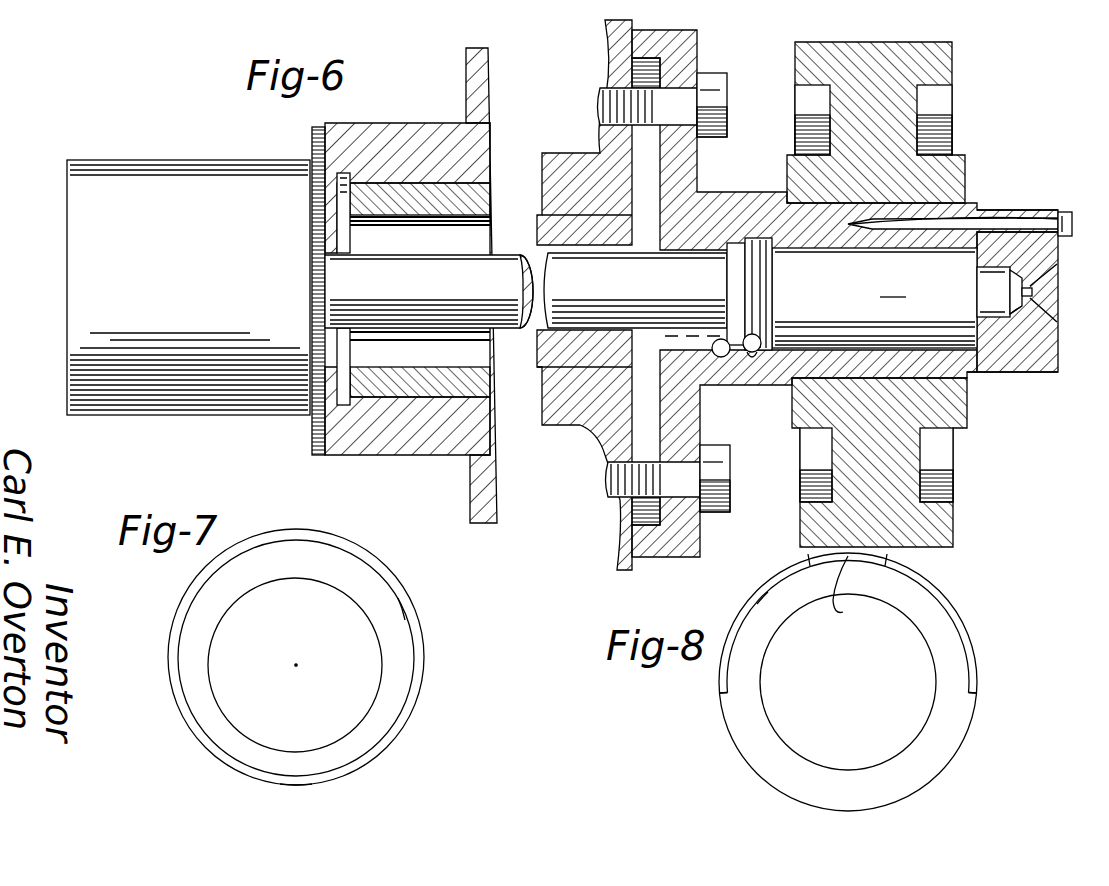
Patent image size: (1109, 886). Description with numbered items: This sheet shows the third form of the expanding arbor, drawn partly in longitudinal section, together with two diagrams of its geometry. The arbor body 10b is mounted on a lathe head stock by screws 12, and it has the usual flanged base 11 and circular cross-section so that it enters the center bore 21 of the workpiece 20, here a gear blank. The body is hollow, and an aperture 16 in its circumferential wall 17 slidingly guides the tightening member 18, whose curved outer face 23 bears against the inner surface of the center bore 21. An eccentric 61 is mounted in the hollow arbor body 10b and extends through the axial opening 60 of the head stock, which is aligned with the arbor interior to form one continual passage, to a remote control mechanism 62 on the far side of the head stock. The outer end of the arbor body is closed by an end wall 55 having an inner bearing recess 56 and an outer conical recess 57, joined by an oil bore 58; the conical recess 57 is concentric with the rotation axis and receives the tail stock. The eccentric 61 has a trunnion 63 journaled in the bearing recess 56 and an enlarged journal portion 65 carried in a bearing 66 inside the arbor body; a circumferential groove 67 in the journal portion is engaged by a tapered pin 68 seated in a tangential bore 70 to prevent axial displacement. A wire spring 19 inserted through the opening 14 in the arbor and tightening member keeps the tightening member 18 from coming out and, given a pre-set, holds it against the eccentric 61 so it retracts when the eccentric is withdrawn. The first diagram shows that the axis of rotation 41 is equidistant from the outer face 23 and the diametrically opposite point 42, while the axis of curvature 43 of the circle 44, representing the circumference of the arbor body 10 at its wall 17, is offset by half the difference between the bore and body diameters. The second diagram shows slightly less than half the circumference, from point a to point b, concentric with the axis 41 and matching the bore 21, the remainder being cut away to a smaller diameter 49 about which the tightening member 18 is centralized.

In FIG. 6, the arbor body 10 is at (720, 172).
In FIG. 6, the arbor body 10b is at (980, 209).
In FIG. 6, the flanged base 11 is at (697, 45).
In FIG. 6, the screws 12 is at (727, 78).
In FIG. 6, the opening 14 is at (1027, 214).
In FIG. 6, the aperture 16 is at (796, 183).
In FIG. 6, the circumferential wall 17 is at (798, 380).
In FIG. 6, the tightening member 18 is at (937, 210).
In FIG. 8, the tightening member 18 is at (849, 593).
In FIG. 6, the wire spring 19 is at (982, 210).
In FIG. 6, the workpiece 20 is at (953, 78).
In FIG. 6, the center bore 21 is at (970, 375).
In FIG. 7, the center bore 21 is at (398, 581).
In FIG. 8, the center bore 21 is at (947, 600).
In FIG. 7, the outer face 23 is at (305, 536).
In FIG. 8, the outer face 23 is at (915, 568).
In FIG. 7, the axis of rotation 41 is at (298, 657).
In FIG. 8, the axis of rotation 41 is at (852, 684).
In FIG. 7, the diametrically opposite point 42 is at (303, 786).
In FIG. 8, the diametrically opposite point 42 is at (852, 806).
In FIG. 7, the axis of curvature 43 is at (298, 665).
In FIG. 7, the circle 44 is at (402, 606).
In FIG. 8, the smaller diameter 49 is at (758, 603).
In FIG. 6, the end wall 55 is at (1070, 222).
In FIG. 6, the inner bearing recess 56 is at (1018, 318).
In FIG. 6, the outer conical recess 57 is at (1042, 272).
In FIG. 6, the oil bore 58 is at (1032, 292).
In FIG. 6, the axial opening 60 is at (478, 350).
In FIG. 6, the eccentric 61 is at (760, 298).
In FIG. 6, the remote control mechanism 62 is at (236, 414).
In FIG. 6, the trunnion 63 is at (981, 288).
In FIG. 6, the journal portion 65 is at (733, 273).
In FIG. 6, the bearing 66 is at (717, 352).
In FIG. 6, the circumferential groove 67 is at (762, 280).
In FIG. 6, the tapered pin 68 is at (747, 357).
In FIG. 6, the tangential bore 70 is at (752, 372).
In FIG. 8, the point a is at (723, 693).
In FIG. 8, the point b is at (975, 692).